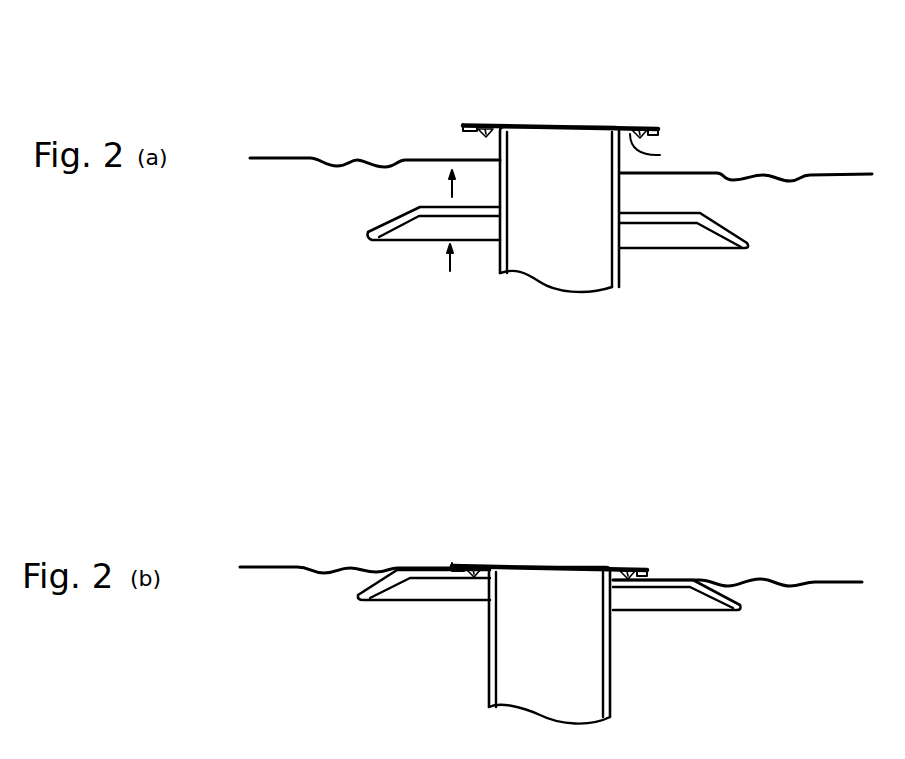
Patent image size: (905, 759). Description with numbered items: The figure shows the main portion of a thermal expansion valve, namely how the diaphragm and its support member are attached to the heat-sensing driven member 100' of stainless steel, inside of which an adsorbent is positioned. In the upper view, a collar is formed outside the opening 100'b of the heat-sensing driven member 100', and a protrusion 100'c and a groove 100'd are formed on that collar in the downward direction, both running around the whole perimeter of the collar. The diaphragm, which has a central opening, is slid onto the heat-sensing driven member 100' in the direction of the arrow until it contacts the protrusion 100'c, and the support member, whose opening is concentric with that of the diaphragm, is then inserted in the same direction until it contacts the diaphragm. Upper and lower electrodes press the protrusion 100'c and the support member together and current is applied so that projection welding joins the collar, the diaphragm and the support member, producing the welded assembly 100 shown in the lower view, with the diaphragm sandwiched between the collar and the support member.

The heat-sensing driven member 100' is at (520, 235).
The tubular member (fixed state) 100 is at (517, 644).
The opening 100'b is at (560, 95).
The protrusion 100'c is at (717, 151).
The groove 100'd is at (729, 119).